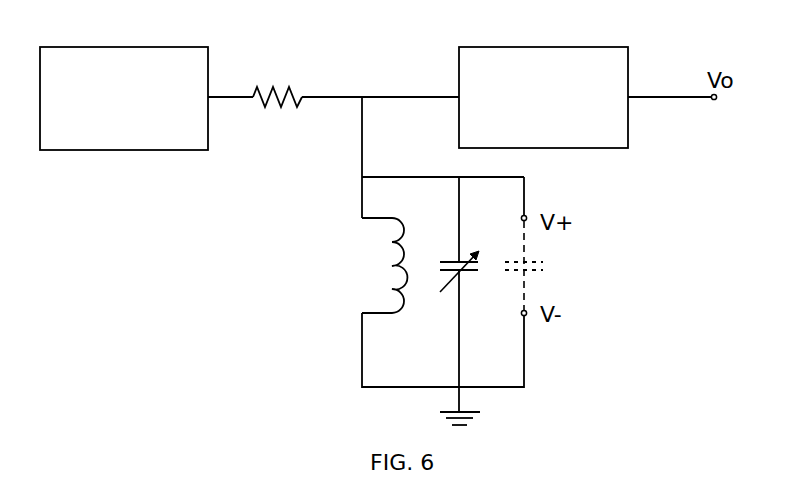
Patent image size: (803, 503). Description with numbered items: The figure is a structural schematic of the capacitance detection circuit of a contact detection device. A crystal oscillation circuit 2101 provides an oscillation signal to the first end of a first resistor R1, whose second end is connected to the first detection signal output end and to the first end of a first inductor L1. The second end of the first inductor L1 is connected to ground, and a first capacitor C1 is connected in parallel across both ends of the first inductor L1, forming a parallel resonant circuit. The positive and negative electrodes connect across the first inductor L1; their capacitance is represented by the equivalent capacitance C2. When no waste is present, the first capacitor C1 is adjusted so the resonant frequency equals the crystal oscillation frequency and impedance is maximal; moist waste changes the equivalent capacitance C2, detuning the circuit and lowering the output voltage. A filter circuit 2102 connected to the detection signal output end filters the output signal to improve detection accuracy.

The crystal oscillation circuit 2101 is at (102, 47).
The filter circuit 2102 is at (522, 47).
The first resistor R1 is at (277, 80).
The first inductor L1 is at (368, 265).
The first capacitor C1 is at (470, 257).
The equivalent capacitance C2 is at (546, 265).